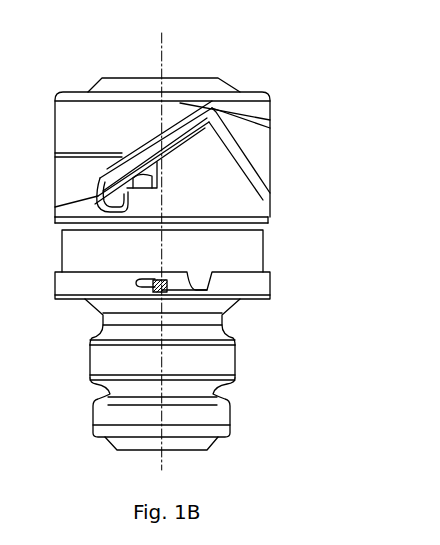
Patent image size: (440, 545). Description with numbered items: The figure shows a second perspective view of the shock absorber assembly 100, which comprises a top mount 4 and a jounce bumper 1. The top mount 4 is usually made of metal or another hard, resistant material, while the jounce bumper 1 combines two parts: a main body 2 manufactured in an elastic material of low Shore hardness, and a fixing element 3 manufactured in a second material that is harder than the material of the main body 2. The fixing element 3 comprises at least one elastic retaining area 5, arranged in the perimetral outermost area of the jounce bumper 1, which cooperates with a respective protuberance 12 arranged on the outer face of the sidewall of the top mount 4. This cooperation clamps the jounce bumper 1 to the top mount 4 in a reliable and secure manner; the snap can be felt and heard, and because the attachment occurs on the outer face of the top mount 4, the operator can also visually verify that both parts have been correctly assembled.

The shock absorber assembly 100 is at (256, 56).
The jounce bumper 1 is at (57, 348).
The main body 2 is at (222, 363).
The fixing element 3 is at (257, 285).
The top mount 4 is at (68, 123).
The elastic retaining area 5 is at (152, 270).
The protuberance 12 is at (147, 283).